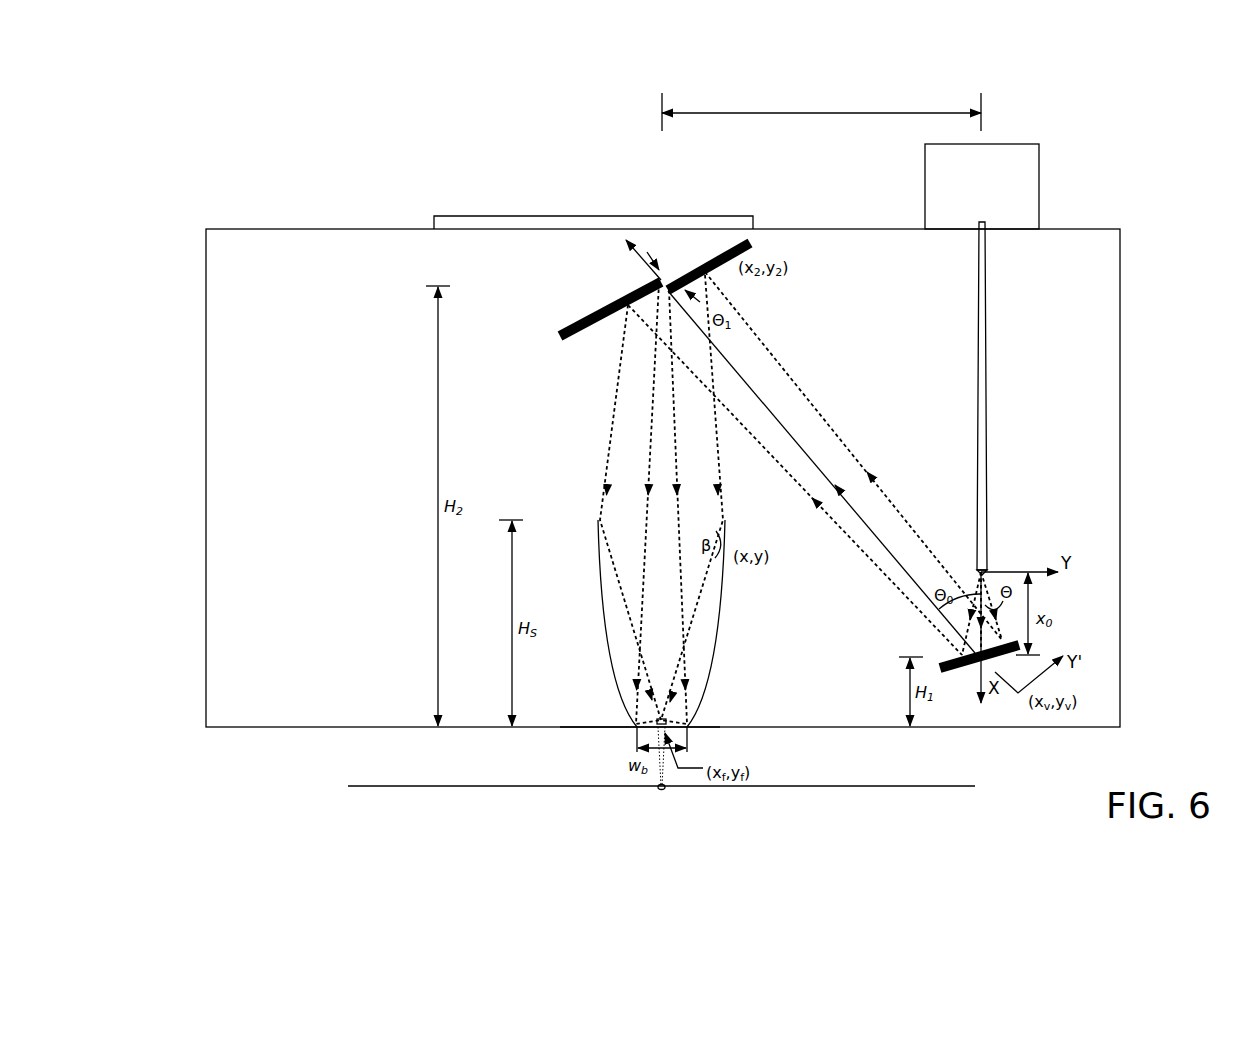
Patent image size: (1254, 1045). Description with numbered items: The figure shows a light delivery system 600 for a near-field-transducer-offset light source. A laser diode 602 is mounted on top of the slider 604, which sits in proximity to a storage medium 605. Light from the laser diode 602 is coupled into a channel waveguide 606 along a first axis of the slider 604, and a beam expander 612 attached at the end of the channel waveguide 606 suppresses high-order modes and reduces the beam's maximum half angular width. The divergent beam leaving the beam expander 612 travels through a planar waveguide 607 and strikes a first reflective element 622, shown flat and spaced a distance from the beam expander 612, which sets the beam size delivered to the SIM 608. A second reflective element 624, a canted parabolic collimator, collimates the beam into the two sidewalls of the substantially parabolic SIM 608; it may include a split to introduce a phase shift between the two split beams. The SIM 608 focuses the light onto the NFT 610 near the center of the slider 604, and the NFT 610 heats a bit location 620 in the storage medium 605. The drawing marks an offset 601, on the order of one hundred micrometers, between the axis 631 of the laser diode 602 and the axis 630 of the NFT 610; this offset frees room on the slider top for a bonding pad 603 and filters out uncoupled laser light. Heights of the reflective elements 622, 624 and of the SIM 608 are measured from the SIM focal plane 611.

The light delivery system 600 is at (252, 112).
The offset 601 is at (837, 108).
The laser diode 602 is at (998, 206).
The bonding pad 603 is at (575, 215).
The slider 604 is at (276, 716).
The storage medium 605 is at (409, 831).
The channel waveguide 606 is at (977, 340).
The planar waveguide 607 is at (811, 258).
The SIM 608 is at (602, 597).
The NFT 610 is at (688, 728).
The SIM focal plane 611 is at (592, 732).
The beam expander 612 is at (977, 528).
The bit location 620 is at (672, 792).
The reflective element 622 is at (951, 672).
The reflective element 624 is at (590, 317).
The axis of the NFT 630 is at (659, 106).
The axis of the laser diode 631 is at (983, 100).